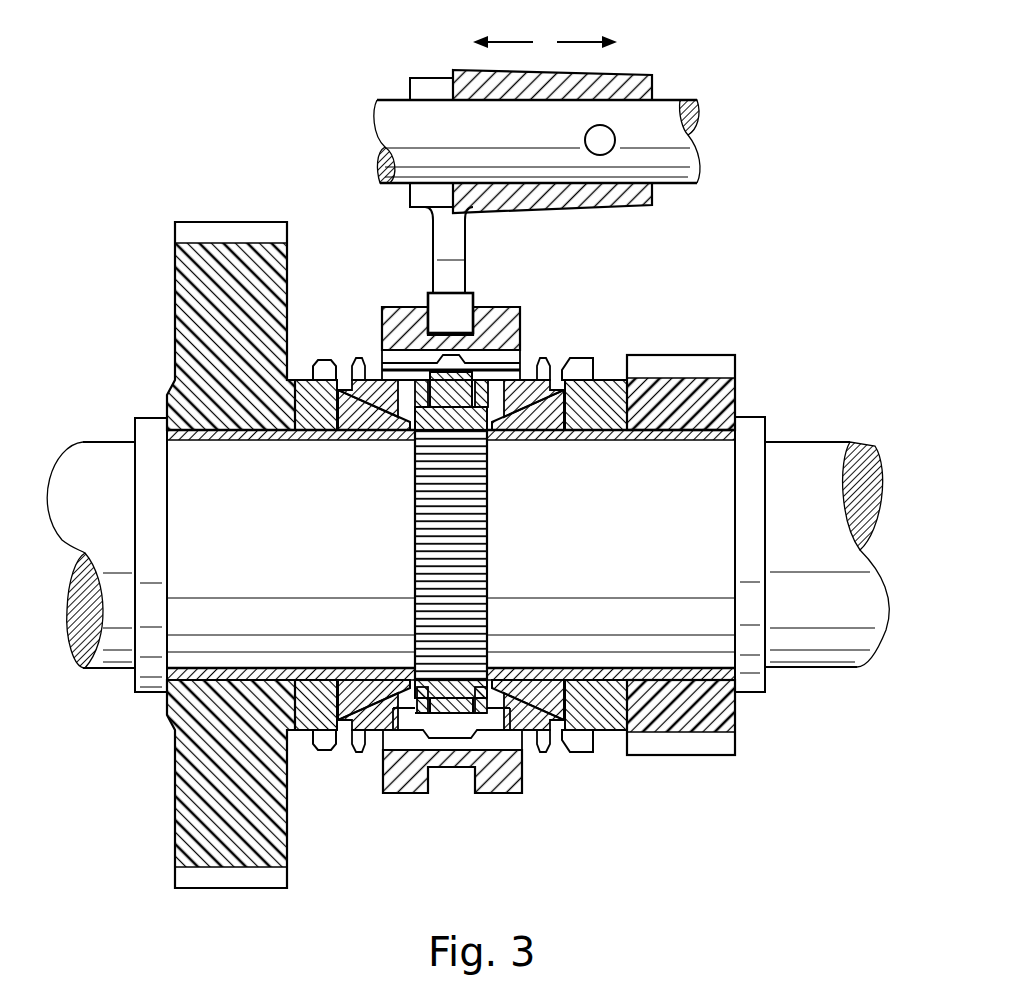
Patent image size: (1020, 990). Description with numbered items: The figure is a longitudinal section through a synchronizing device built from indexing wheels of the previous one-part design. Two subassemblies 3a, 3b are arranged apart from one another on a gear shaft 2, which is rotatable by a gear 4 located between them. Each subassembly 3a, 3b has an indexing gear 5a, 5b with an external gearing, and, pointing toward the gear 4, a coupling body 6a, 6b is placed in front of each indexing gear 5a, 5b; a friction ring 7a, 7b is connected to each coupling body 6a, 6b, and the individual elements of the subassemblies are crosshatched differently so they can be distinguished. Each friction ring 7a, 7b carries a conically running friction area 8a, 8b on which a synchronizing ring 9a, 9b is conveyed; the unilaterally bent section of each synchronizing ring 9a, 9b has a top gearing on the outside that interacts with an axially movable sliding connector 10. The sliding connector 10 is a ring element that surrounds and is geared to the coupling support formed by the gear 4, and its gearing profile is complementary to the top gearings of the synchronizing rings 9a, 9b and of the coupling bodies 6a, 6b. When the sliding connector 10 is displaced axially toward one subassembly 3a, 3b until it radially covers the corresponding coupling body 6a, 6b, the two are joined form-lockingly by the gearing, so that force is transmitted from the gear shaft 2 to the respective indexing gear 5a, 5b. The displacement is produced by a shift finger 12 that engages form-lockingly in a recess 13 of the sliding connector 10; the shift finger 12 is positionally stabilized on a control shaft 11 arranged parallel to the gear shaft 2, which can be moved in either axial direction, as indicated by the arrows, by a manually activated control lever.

The gear shaft 2 is at (298, 558).
The subassembly 3a is at (186, 508).
The subassembly 3b is at (727, 509).
The gear 4 is at (472, 527).
The indexing gear 5a is at (183, 327).
The indexing gear 5b is at (707, 715).
The coupling body 6a is at (317, 360).
The coupling body 6b is at (580, 372).
The friction ring 7a is at (360, 424).
The friction ring 7b is at (570, 395).
The friction area 8a is at (368, 378).
The friction area 8b is at (528, 380).
The synchronizing ring 9a is at (322, 360).
The synchronizing ring 9b is at (560, 357).
The sliding connector 10 is at (490, 317).
The control shaft 11 is at (527, 139).
The shift finger 12 is at (447, 241).
The recess 13 is at (450, 776).